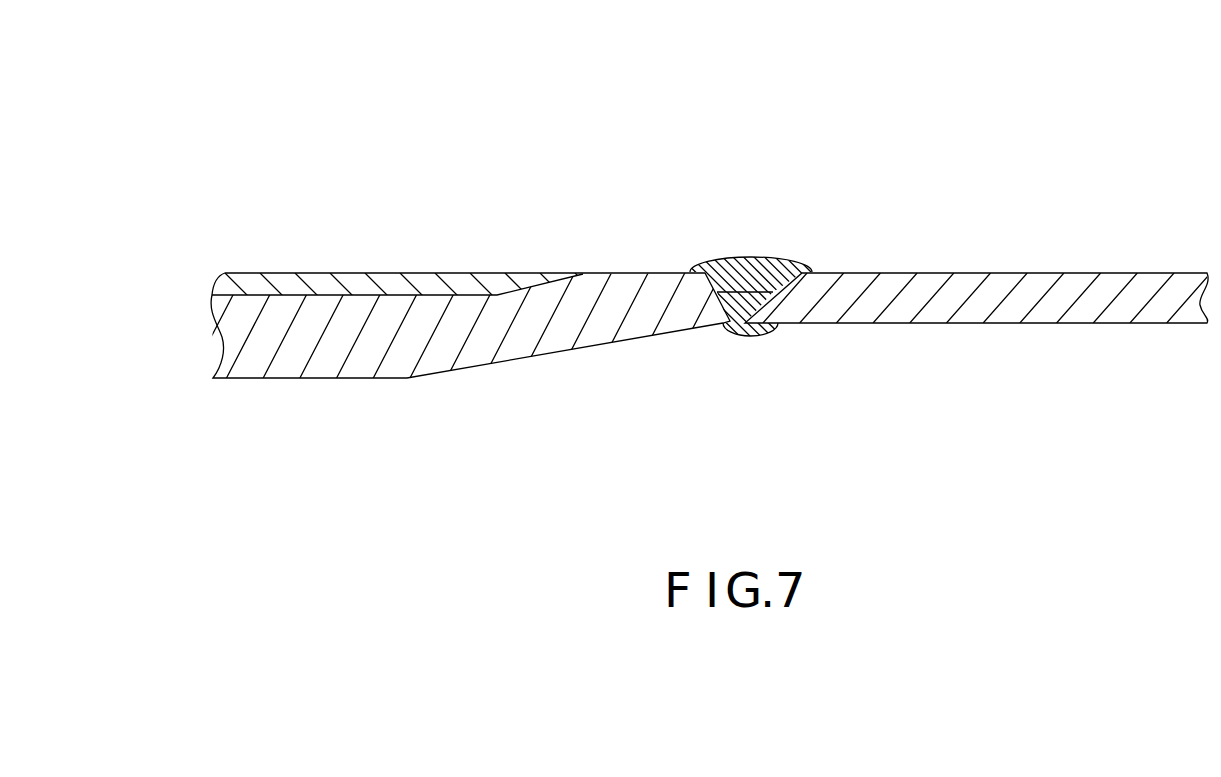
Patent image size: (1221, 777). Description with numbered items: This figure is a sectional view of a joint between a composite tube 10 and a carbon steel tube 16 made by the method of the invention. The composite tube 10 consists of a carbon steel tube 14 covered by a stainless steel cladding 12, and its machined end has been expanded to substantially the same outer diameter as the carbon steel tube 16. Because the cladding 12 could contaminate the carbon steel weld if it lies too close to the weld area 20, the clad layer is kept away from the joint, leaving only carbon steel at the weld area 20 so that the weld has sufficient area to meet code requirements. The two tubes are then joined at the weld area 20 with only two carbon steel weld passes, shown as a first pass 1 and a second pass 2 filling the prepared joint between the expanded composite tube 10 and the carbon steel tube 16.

The root weld bead 1 is at (746, 348).
The upper weld bead 2 is at (791, 252).
The composite tube 10 is at (438, 363).
The stainless steel cladding 12 is at (408, 272).
The carbon steel tube 14 is at (225, 343).
The carbon steel tube 16 is at (1007, 324).
The weld area 20 is at (750, 245).